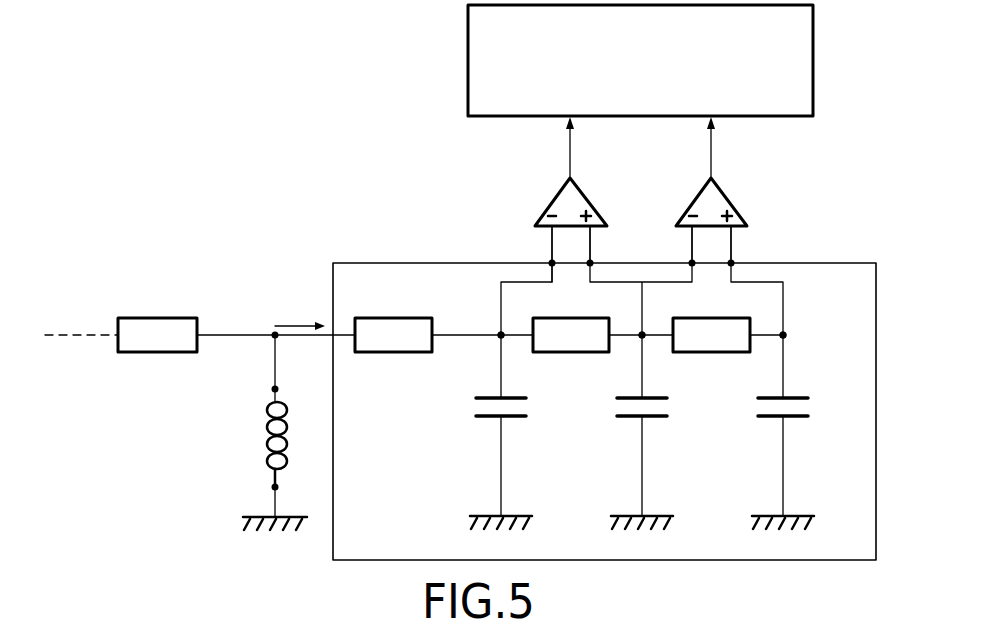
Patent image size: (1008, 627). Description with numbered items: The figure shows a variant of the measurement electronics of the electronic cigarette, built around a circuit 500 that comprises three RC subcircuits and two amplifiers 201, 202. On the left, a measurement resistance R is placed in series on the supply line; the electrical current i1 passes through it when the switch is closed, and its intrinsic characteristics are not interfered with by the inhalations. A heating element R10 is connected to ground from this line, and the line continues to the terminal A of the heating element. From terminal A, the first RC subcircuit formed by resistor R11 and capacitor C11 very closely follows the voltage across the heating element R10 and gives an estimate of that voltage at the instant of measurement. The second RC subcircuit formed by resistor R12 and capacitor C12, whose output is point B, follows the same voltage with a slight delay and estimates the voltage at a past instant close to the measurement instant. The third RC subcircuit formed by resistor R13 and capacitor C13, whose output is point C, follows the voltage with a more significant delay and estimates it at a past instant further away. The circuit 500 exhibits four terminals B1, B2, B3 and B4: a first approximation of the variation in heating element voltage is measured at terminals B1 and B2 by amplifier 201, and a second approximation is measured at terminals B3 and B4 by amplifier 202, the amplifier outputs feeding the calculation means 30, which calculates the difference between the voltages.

The calculation means 30 is at (652, 77).
The first amplifier 201 is at (553, 203).
The second amplifier 202 is at (729, 203).
The circuit 500 is at (382, 262).
The measurement resistance R is at (160, 353).
The heating element R10 is at (265, 441).
The resistor of the first RC subcircuit R11 is at (397, 353).
The resistor of the second RC subcircuit R12 is at (575, 353).
The resistor of the third RC subcircuit R13 is at (715, 353).
The capacitor of the first RC subcircuit C11 is at (514, 418).
The capacitor of the second RC subcircuit C12 is at (655, 418).
The capacitor of the third RC subcircuit C13 is at (796, 418).
The electrical current i1 is at (300, 315).
The terminal A is at (491, 324).
The point B is at (632, 324).
The point C is at (794, 324).
The terminal B1 is at (536, 254).
The terminal B2 is at (609, 245).
The terminal B3 is at (676, 245).
The terminal B4 is at (750, 245).